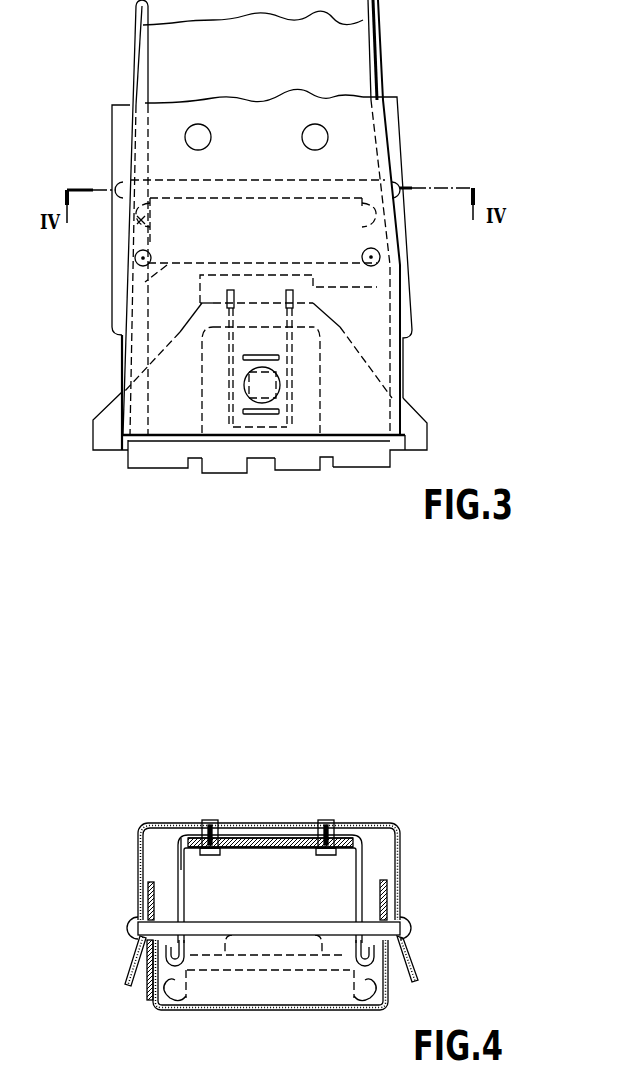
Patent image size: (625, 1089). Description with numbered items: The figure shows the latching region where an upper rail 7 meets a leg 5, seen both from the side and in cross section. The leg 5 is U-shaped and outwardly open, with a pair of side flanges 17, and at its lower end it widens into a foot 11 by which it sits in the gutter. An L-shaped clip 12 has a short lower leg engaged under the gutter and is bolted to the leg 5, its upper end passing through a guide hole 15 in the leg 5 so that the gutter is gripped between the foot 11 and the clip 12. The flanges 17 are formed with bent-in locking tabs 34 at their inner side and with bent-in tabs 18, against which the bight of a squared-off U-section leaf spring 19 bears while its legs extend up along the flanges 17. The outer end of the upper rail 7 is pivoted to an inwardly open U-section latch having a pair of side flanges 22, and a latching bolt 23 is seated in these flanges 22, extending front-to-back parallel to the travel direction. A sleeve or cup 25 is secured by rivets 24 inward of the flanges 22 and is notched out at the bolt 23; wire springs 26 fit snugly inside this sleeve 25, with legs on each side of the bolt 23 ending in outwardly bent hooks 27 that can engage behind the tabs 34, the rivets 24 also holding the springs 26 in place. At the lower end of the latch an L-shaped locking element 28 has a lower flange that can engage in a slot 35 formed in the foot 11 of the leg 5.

In FIG. 4, the leg 5 is at (225, 1012).
In FIG. 3, the upper rail 7 is at (367, 349).
In FIG. 4, the upper rail 7 is at (388, 822).
In FIG. 3, the foot 11 is at (415, 435).
In FIG. 3, the clip 12 is at (142, 453).
In FIG. 3, the guide hole 15 is at (400, 289).
In FIG. 4, the side flanges 17 is at (383, 902).
In FIG. 3, the bent-in tabs 18 is at (380, 259).
In FIG. 3, the leaf spring 19 is at (137, 67).
In FIG. 4, the side flanges 22 is at (400, 867).
In FIG. 3, the latching bolt 23 is at (127, 197).
In FIG. 4, the latching bolt 23 is at (385, 926).
In FIG. 4, the rivets 24 is at (217, 822).
In FIG. 4, the sleeve 25 is at (177, 857).
In FIG. 4, the wire springs 26 is at (347, 882).
In FIG. 4, the hooks 27 is at (128, 977).
In FIG. 3, the locking element 28 is at (225, 463).
In FIG. 3, the locking tabs 34 is at (130, 230).
In FIG. 4, the locking tabs 34 is at (182, 1000).
In FIG. 3, the slot 35 is at (327, 458).